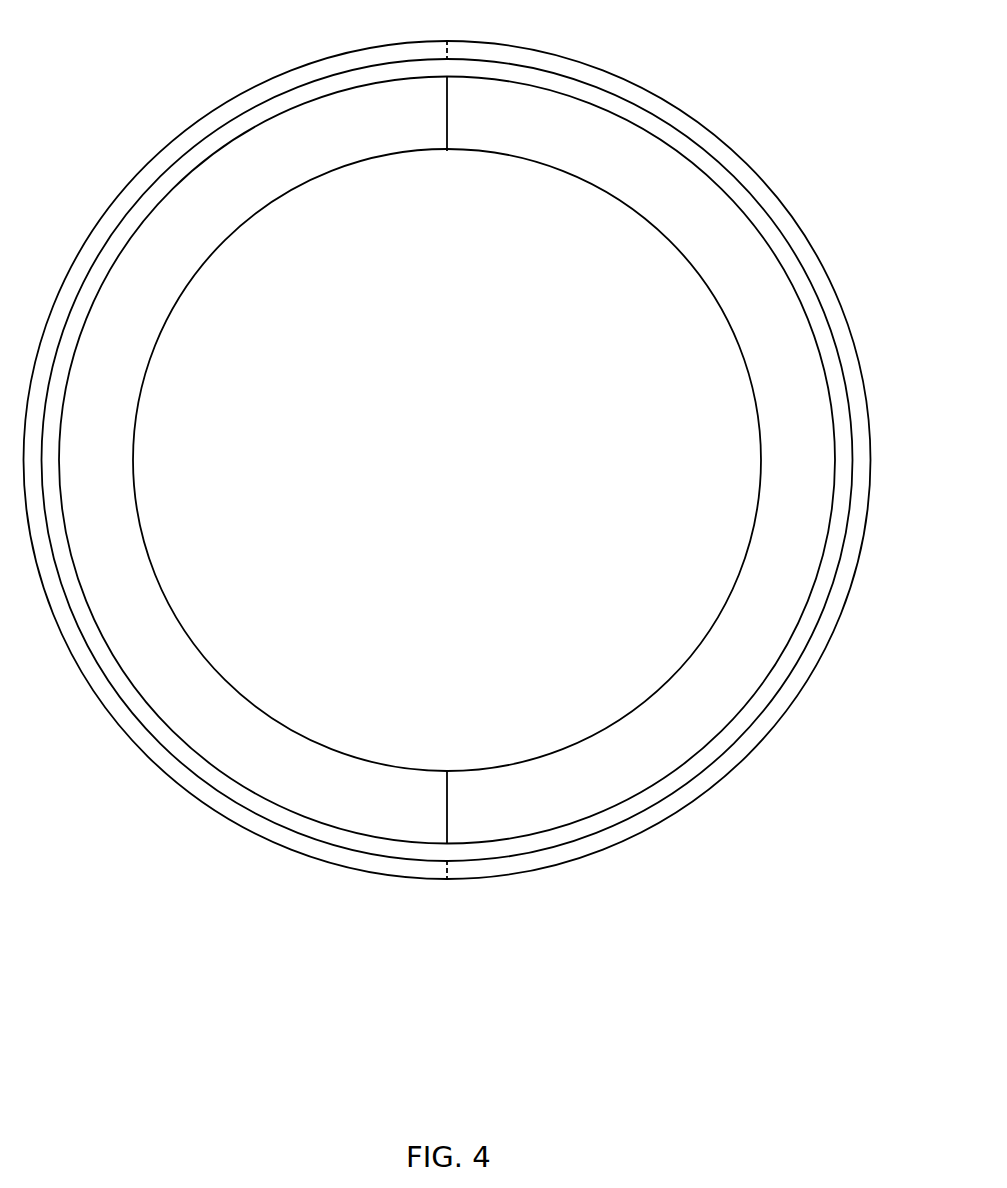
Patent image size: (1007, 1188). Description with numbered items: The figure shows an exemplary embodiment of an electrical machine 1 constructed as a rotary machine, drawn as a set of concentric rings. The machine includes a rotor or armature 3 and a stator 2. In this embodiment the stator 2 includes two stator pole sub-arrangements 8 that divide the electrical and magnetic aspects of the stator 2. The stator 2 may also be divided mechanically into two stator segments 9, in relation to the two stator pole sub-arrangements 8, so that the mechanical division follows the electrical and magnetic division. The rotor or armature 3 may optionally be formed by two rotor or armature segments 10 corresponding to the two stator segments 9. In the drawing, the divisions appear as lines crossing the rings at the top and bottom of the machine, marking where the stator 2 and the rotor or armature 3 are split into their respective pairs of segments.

The electrical machine 1 is at (132, 60).
The stator 2 is at (575, 742).
The rotor or armature 3 is at (653, 830).
The stator pole sub-arrangements 8 is at (290, 728).
The stator segments 9 is at (345, 168).
The rotor or armature segments 10 is at (302, 65).